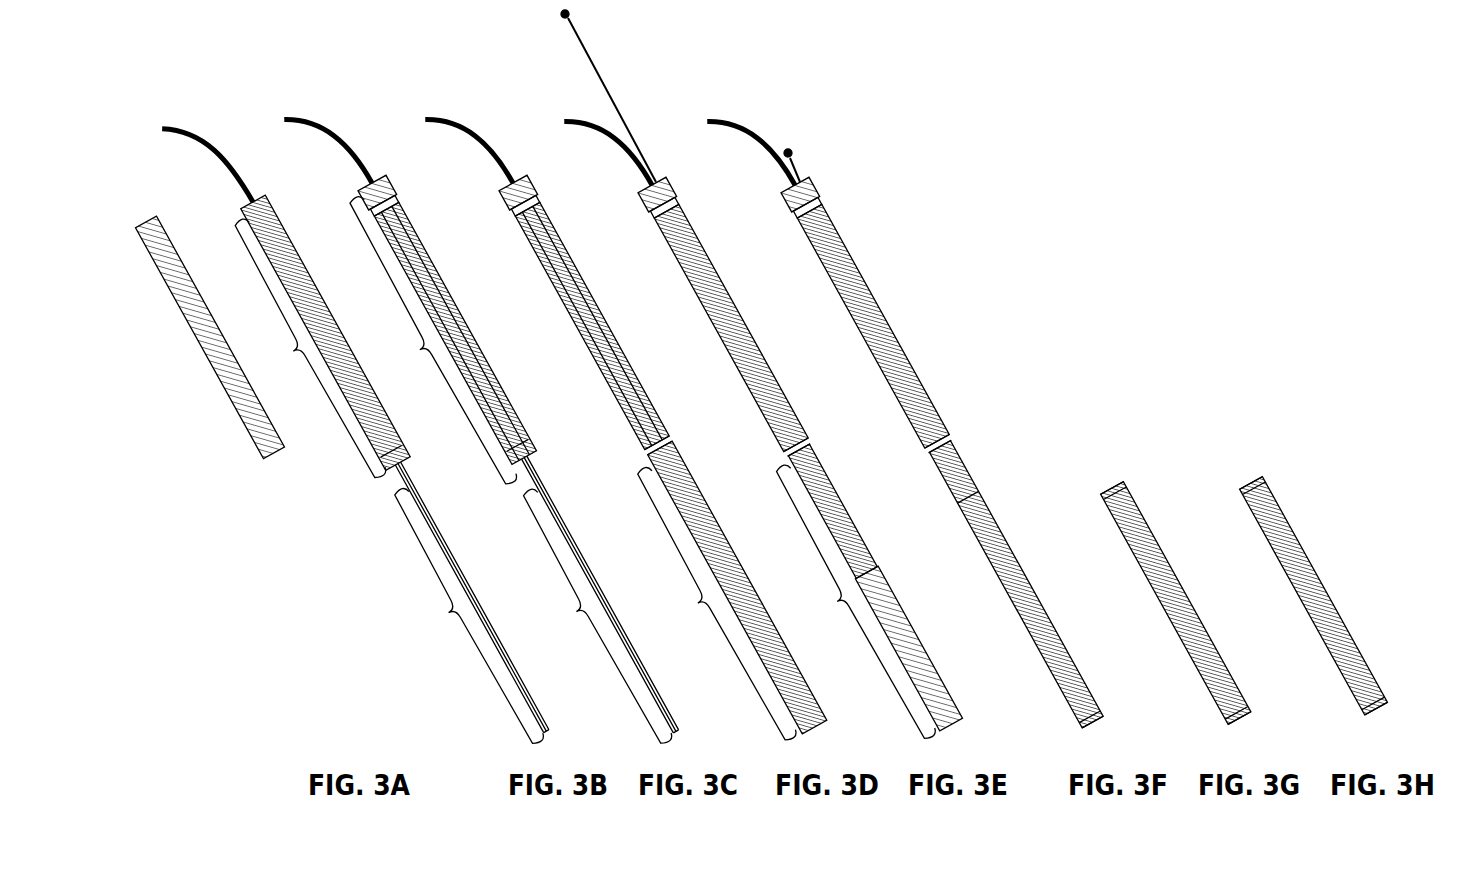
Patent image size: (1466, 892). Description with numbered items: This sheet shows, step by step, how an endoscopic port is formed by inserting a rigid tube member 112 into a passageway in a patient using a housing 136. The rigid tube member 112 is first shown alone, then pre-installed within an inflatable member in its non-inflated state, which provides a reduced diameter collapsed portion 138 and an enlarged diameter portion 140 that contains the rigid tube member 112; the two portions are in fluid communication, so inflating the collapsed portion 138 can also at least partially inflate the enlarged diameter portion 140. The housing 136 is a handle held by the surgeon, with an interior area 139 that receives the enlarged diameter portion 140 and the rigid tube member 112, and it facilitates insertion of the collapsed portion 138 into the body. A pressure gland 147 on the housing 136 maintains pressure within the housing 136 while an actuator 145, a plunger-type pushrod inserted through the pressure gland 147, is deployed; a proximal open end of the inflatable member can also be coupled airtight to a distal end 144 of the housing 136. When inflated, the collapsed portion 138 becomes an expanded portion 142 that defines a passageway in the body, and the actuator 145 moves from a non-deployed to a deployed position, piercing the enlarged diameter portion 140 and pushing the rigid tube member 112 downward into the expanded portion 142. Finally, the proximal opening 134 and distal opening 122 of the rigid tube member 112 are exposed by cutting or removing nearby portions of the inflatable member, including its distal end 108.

In FIG. 3F, the distal end 108 is at (1105, 730).
In FIG. 3G, the distal end 108 is at (1243, 730).
In FIG. 3A, the rigid tube member 112 is at (186, 322).
In FIG. 3B, the rigid tube member 112 is at (277, 212).
In FIG. 3C, the rigid tube member 112 is at (430, 262).
In FIG. 3D, the rigid tube member 112 is at (556, 250).
In FIG. 3E, the rigid tube member 112 is at (848, 497).
In FIG. 3F, the rigid tube member 112 is at (982, 497).
In FIG. 3G, the rigid tube member 112 is at (1158, 552).
In FIG. 3H, the rigid tube member 112 is at (1288, 523).
In FIG. 3H, the distal opening 122 is at (1380, 714).
In FIG. 3G, the proximal opening 134 is at (1113, 490).
In FIG. 3H, the proximal opening 134 is at (1253, 486).
In FIG. 3C, the housing 136 is at (405, 207).
In FIG. 3D, the housing 136 is at (546, 206).
In FIG. 3E, the housing 136 is at (692, 219).
In FIG. 3F, the housing 136 is at (832, 204).
In FIG. 3B, the collapsed portion 138 is at (462, 606).
In FIG. 3C, the collapsed portion 138 is at (590, 603).
In FIG. 3C, the interior area 139 is at (392, 188).
In FIG. 3D, the interior area 139 is at (532, 188).
In FIG. 3E, the interior area 139 is at (670, 188).
In FIG. 3F, the interior area 139 is at (818, 188).
In FIG. 3B, the enlarged diameter portion 140 is at (306, 350).
In FIG. 3C, the enlarged diameter portion 140 is at (429, 342).
In FIG. 3D, the expanded portion 142 is at (725, 594).
In FIG. 3E, the expanded portion 142 is at (865, 597).
In FIG. 3D, the distal end of housing 144 is at (671, 443).
In FIG. 3E, the distal end of housing 144 is at (812, 443).
In FIG. 3F, the distal end of housing 144 is at (953, 443).
In FIG. 3E, the actuator 145 is at (598, 50).
In FIG. 3F, the actuator 145 is at (798, 165).
In FIG. 3C, the pressure gland 147 is at (377, 180).
In FIG. 3D, the pressure gland 147 is at (516, 181).
In FIG. 3E, the pressure gland 147 is at (661, 182).
In FIG. 3F, the pressure gland 147 is at (812, 180).